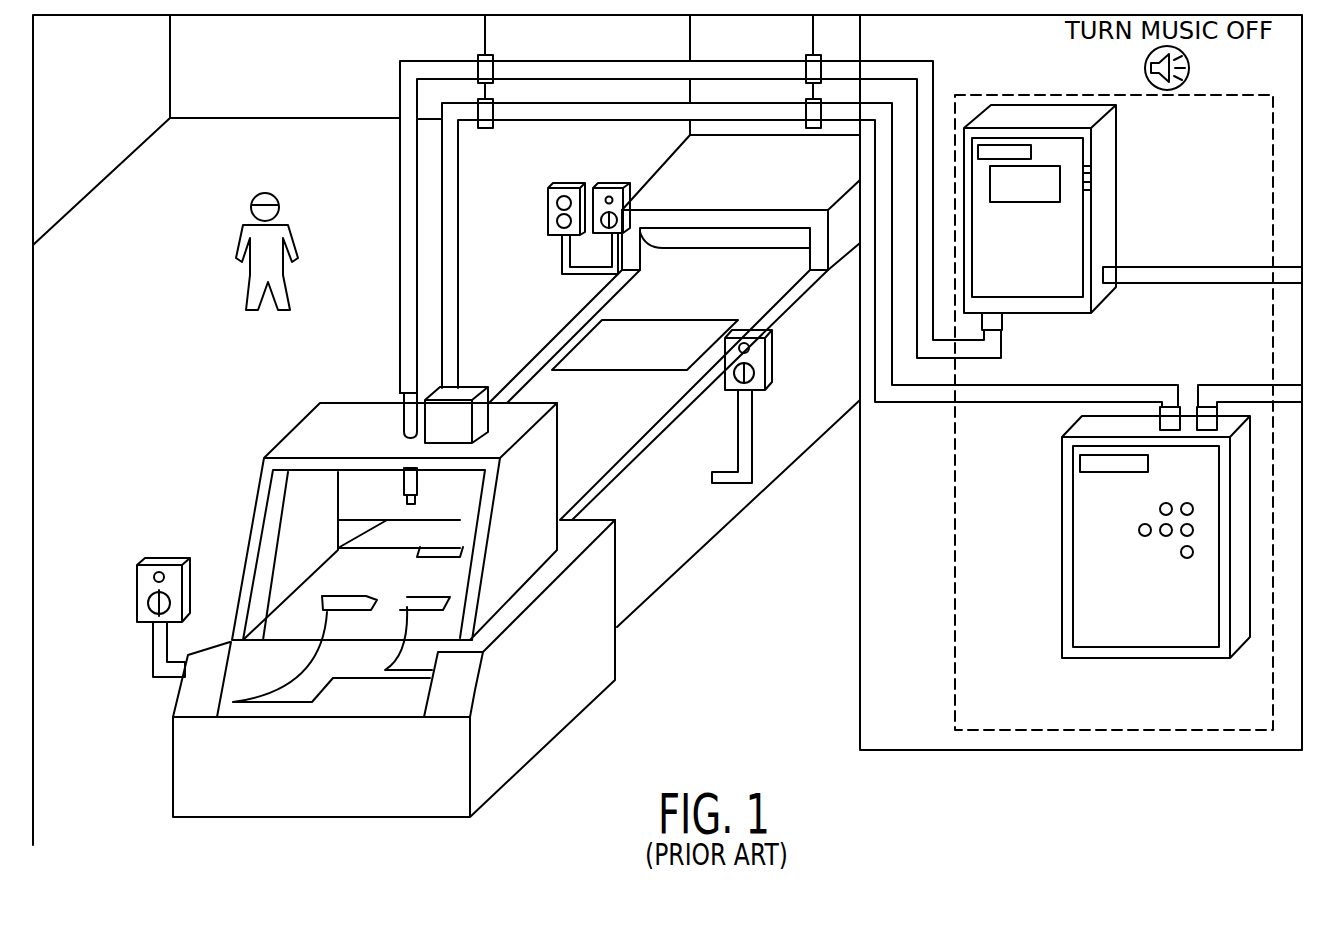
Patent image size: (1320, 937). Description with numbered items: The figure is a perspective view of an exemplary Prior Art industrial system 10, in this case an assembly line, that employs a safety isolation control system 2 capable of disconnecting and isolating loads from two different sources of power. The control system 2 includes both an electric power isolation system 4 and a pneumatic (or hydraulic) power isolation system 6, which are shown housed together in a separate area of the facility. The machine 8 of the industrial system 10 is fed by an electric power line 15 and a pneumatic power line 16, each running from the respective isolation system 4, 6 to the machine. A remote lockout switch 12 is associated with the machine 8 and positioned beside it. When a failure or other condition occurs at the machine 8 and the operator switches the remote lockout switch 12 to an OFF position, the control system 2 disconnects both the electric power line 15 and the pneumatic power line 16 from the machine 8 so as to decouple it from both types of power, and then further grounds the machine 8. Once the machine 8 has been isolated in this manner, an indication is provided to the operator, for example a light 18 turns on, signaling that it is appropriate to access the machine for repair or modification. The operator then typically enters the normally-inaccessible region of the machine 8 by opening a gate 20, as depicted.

The control system 2 is at (1113, 732).
The electric power isolation system 4 is at (1147, 595).
The pneumatic power isolation system 6 is at (1046, 268).
The machine 8 is at (394, 592).
The industrial system 10 is at (190, 438).
The remote lockout switch 12 is at (160, 580).
The electric power line 15 is at (1250, 382).
The pneumatic power line 16 is at (1232, 265).
The light 18 is at (160, 531).
The gate 20 is at (253, 512).